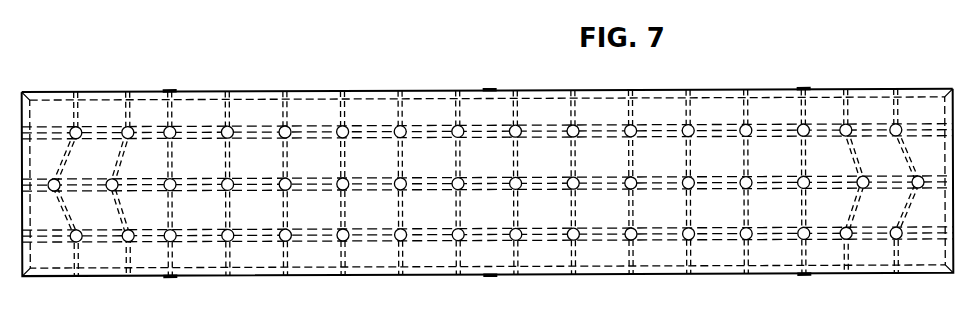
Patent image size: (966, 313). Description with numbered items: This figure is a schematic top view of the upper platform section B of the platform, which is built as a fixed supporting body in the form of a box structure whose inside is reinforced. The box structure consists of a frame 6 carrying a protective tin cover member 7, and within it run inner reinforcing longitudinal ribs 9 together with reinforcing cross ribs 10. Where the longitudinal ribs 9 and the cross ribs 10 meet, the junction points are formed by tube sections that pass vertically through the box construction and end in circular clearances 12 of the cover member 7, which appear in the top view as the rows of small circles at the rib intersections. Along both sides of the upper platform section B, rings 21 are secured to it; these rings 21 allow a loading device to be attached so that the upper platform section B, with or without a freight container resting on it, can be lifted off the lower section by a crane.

The upper platform section B is at (317, 110).
The frame 6 is at (92, 92).
The protective tin cover member 7 is at (373, 107).
The inner reinforcing longitudinal rib 9 is at (207, 178).
The reinforcing cross rib 10 is at (402, 203).
The circular clearance 12 is at (744, 242).
The ring 21 is at (170, 89).